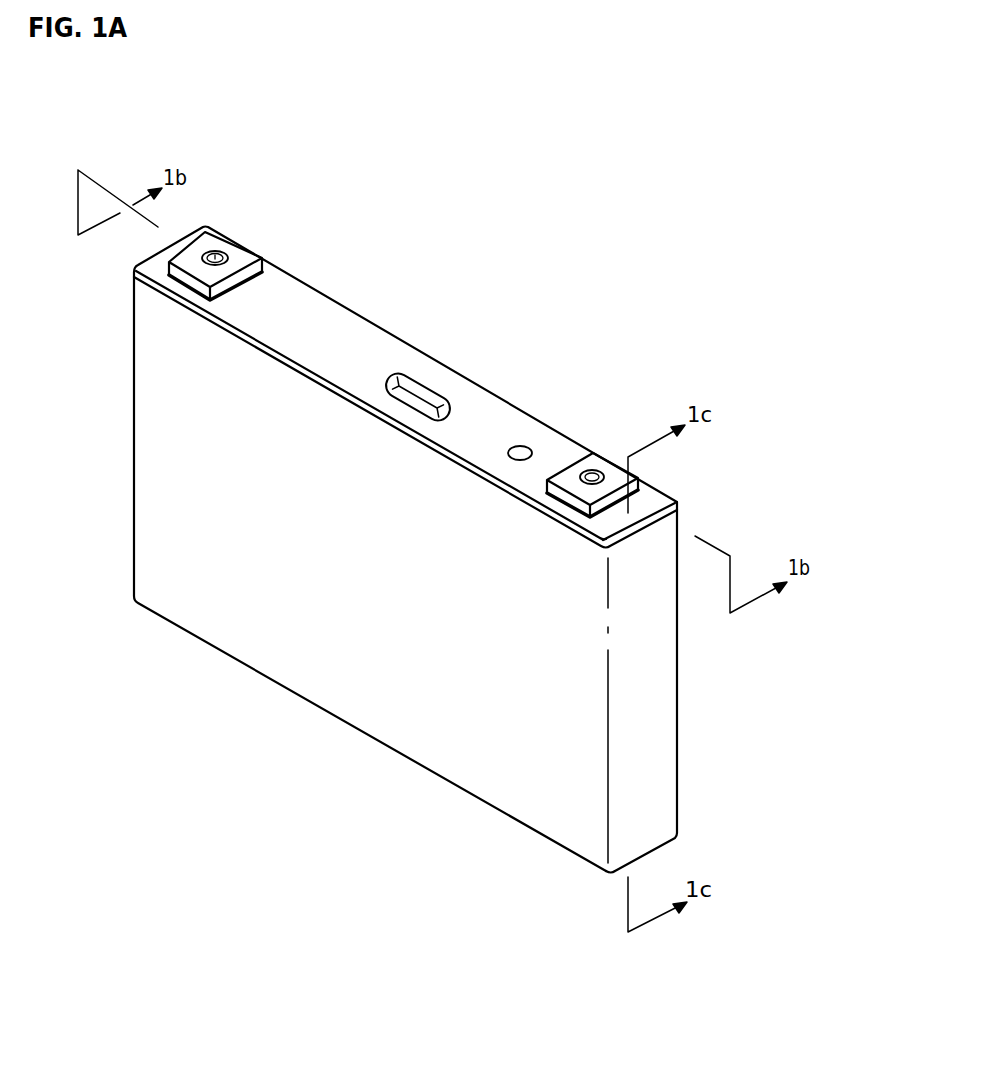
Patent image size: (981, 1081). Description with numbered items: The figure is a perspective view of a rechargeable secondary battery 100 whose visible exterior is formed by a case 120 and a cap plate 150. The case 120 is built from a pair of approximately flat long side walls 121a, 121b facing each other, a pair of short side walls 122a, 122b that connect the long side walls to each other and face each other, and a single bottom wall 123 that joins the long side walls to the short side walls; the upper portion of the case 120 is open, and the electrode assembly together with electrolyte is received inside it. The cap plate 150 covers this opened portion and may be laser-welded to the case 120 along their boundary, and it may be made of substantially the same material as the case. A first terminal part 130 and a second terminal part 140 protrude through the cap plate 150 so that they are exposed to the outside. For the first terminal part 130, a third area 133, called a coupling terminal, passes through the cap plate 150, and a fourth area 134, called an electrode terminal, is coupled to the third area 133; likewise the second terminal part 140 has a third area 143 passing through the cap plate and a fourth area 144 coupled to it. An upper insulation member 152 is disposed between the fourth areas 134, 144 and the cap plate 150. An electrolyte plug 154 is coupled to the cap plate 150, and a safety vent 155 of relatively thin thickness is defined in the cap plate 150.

The rechargeable secondary battery 100 is at (742, 178).
The case 120 is at (240, 661).
The long side wall 121a is at (363, 717).
The long side wall 121b is at (679, 668).
The short side wall 122a is at (133, 432).
The short side wall 122b is at (659, 736).
The bottom wall 123 is at (440, 780).
The first terminal part 130 is at (320, 158).
The third area (coupling terminal) 133 is at (214, 251).
The fourth area (electrode terminal) 134 is at (244, 256).
The second terminal part 140 is at (667, 375).
The third area 143 is at (586, 471).
The fourth area 144 is at (607, 461).
The cap plate 150 is at (352, 313).
The upper insulation member 152 is at (253, 284).
The electrolyte plug 154 is at (514, 447).
The safety vent 155 is at (424, 381).